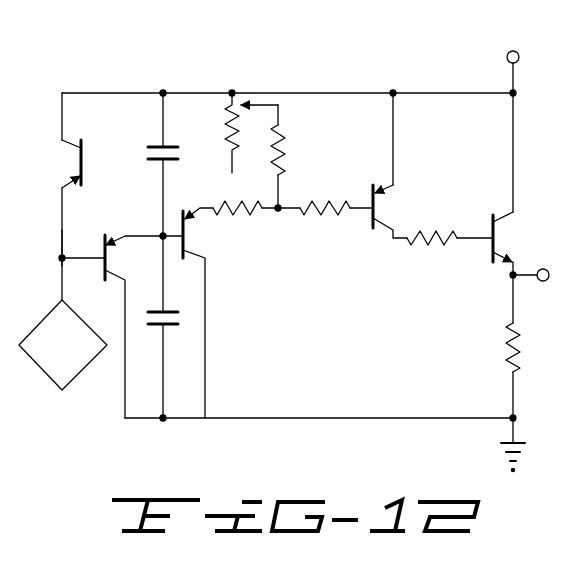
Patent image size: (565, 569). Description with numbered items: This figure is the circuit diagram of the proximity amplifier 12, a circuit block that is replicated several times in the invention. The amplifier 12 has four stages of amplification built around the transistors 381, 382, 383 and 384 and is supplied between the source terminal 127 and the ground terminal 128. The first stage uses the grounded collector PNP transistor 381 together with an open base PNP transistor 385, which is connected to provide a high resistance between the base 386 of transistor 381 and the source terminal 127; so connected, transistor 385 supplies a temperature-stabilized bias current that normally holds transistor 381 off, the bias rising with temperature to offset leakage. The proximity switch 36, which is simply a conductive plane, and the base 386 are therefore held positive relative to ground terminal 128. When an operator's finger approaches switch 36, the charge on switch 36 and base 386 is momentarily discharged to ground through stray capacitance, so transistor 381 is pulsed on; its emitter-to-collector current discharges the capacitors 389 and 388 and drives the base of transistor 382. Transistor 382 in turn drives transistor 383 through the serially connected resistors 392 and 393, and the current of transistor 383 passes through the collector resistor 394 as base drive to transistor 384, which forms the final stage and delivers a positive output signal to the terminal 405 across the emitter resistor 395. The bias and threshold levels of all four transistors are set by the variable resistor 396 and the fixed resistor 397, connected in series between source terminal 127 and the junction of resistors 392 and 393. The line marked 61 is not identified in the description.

The proximity amplifier 12 is at (416, 74).
The source terminal 127 is at (507, 61).
The ground terminal 128 is at (504, 443).
The open base PNP transistor 385 is at (78, 155).
The capacitor 389 is at (158, 162).
The capacitor 388 is at (174, 327).
The base 386 is at (64, 256).
The line 61 is at (31, 242).
The grounded collector PNP transistor 381 is at (108, 260).
The transistor 382 is at (190, 248).
The resistor 392 is at (236, 212).
The resistor 393 is at (324, 204).
The variable resistor 396 is at (228, 127).
The fixed resistor 397 is at (284, 141).
The transistor 383 is at (378, 206).
The collector resistor 394 is at (435, 235).
The transistor 384 is at (498, 241).
The output terminal 405 is at (541, 282).
The emitter resistor 395 is at (506, 362).
The proximity switch 36 is at (80, 372).